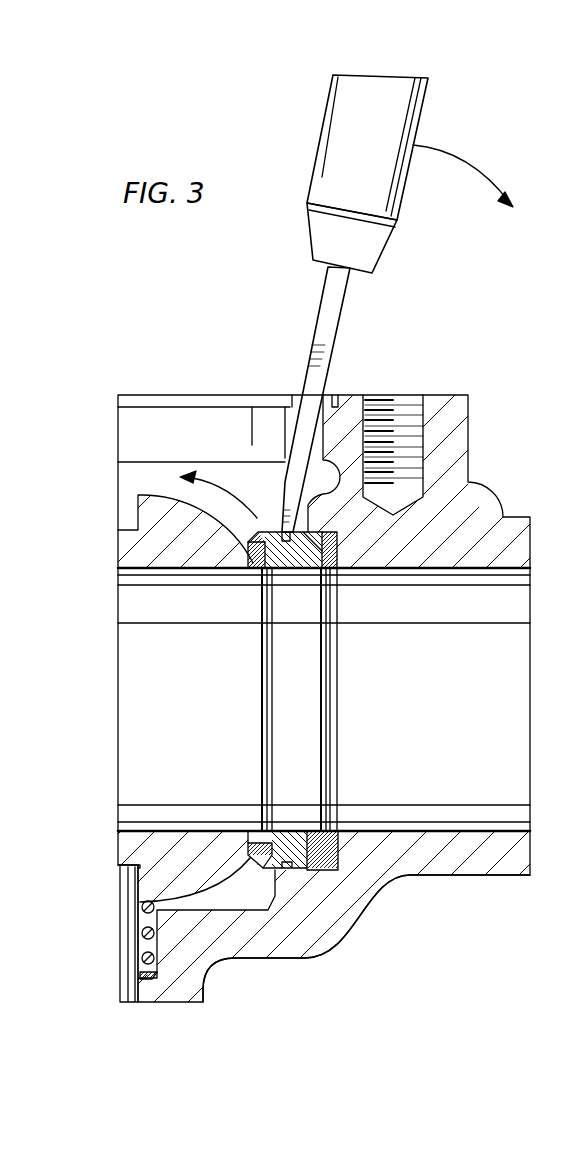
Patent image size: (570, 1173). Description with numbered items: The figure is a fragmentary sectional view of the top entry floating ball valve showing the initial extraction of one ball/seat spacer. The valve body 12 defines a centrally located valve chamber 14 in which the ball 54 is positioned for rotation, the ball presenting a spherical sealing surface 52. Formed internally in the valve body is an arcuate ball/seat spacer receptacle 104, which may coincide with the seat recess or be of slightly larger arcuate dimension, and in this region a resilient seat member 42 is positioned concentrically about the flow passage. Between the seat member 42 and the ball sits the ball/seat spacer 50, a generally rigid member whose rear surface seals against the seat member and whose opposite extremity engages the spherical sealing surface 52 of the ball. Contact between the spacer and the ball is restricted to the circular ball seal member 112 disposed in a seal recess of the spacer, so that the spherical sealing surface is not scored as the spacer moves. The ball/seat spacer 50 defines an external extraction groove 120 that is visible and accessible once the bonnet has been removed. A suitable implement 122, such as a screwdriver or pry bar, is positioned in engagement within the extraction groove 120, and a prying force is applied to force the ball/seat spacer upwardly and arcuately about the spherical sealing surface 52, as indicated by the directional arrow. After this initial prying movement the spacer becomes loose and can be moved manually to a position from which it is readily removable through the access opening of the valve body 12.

The valve body 12 is at (367, 895).
The valve chamber 14 is at (267, 897).
The seat member 42 is at (337, 540).
The ball/seat spacer member 50 is at (298, 568).
The spherical sealing surface 52 is at (164, 493).
The ball 54 is at (207, 868).
The ball/seat spacer receptacle 104 is at (305, 840).
The circular ball seal member 112 is at (247, 840).
The extraction groove 120 is at (250, 548).
The implement 122 is at (327, 135).